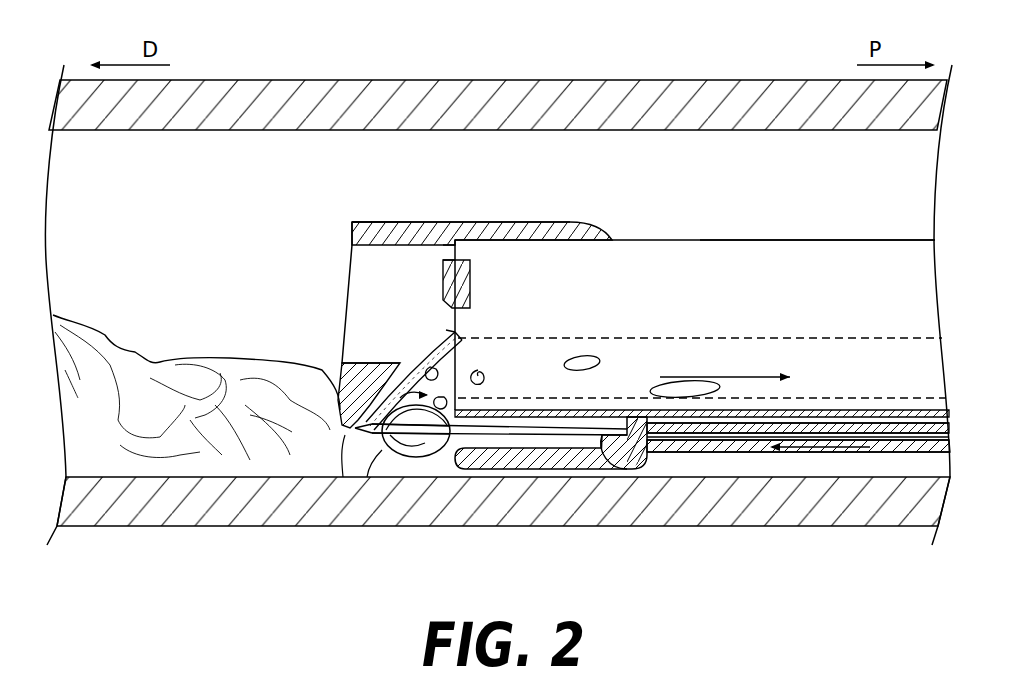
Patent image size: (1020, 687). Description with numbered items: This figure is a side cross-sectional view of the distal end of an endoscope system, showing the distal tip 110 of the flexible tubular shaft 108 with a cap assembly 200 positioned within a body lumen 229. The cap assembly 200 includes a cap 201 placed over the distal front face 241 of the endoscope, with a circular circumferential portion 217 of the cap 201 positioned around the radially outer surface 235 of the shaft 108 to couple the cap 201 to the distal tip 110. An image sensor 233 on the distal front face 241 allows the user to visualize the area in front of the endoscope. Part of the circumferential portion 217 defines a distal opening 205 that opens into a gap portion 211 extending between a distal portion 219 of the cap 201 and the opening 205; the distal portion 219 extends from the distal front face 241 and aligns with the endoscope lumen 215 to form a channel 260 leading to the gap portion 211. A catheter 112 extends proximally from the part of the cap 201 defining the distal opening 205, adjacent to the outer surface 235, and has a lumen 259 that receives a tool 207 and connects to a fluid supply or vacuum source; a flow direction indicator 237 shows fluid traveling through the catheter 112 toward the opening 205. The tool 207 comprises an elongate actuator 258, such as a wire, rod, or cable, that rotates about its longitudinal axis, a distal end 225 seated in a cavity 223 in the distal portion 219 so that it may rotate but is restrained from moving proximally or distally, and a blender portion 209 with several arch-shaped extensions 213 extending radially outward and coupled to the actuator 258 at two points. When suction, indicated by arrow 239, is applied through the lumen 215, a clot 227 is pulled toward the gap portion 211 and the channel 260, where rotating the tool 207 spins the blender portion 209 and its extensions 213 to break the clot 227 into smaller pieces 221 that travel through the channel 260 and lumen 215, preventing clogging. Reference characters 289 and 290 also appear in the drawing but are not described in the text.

The flexible tubular shaft 108 is at (888, 243).
The distal tip 110 is at (346, 191).
The catheter 112 is at (903, 447).
The cap assembly 200 is at (288, 204).
The cap 201 is at (372, 242).
The distal opening 205 is at (533, 438).
The tool 207 is at (670, 436).
The blender portion 209 is at (388, 457).
The gap portion 211 is at (437, 456).
The extension 213 is at (392, 440).
The lumen 215 is at (705, 338).
The circumferential portion 217 is at (528, 222).
The distal portion 219 is at (340, 383).
The smaller pieces 221 is at (585, 355).
The cavity 223 is at (346, 436).
The distal end 225 is at (345, 397).
The clot 227 is at (128, 370).
The body lumen 229 is at (513, 88).
The image sensor 233 is at (473, 275).
The radially outer surface 235 is at (838, 240).
The flow direction indicator 237 is at (795, 445).
The arrow 239 is at (757, 377).
The distal front face 241 is at (451, 256).
The actuator 258 is at (598, 440).
The lumen 259 is at (712, 446).
The channel 260 is at (442, 335).
The lower arm 289 is at (480, 469).
The opening 290 is at (446, 330).